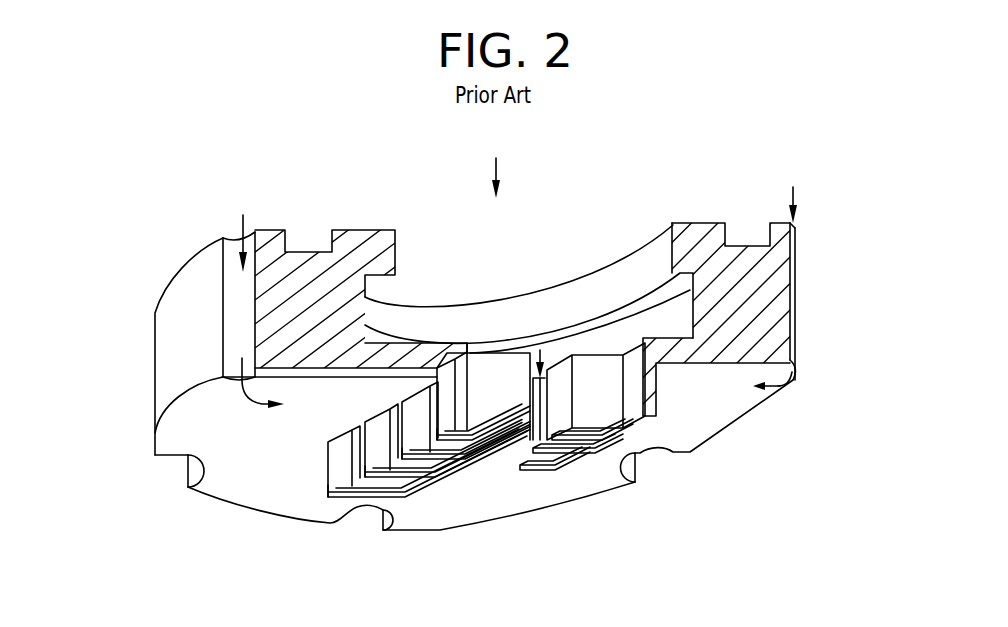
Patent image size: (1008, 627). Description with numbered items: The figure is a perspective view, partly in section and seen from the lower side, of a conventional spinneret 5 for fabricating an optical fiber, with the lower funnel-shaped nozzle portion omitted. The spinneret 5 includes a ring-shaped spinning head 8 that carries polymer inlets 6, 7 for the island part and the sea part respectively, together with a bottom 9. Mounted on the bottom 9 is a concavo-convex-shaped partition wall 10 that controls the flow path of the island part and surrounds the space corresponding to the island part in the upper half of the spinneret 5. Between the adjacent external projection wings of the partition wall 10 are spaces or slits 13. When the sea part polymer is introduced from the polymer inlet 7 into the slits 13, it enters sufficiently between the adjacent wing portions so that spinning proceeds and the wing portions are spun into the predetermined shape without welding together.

The spinneret 5 is at (143, 401).
The polymer inlet 6 is at (670, 250).
The polymer inlet 7 is at (233, 257).
The ring-shaped spinning head 8 is at (385, 235).
The bottom 9 is at (237, 490).
The concavo-convex-shaped partition wall 10 is at (633, 372).
The slits 13 is at (425, 420).